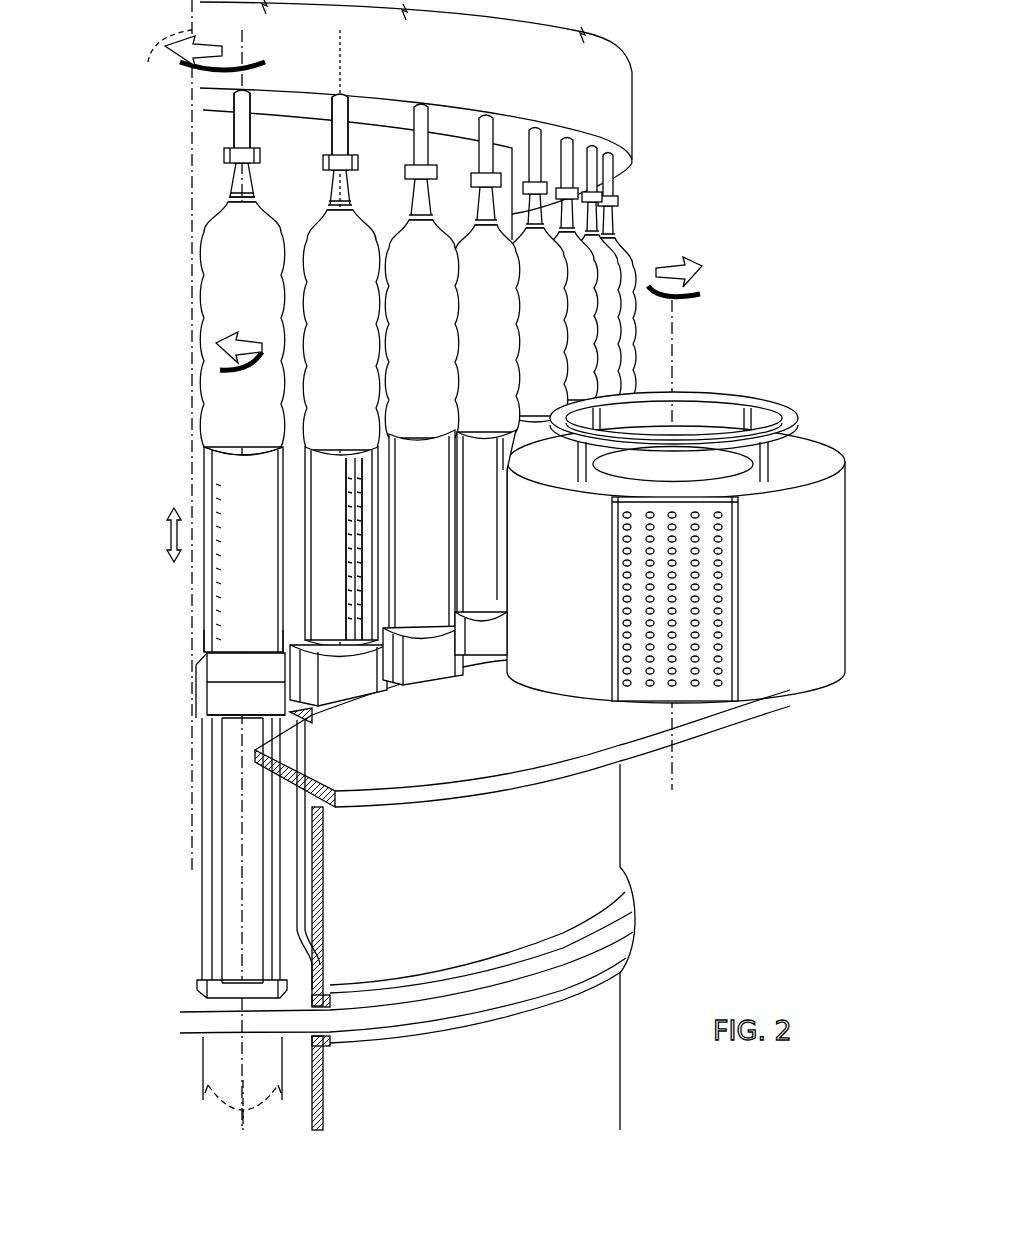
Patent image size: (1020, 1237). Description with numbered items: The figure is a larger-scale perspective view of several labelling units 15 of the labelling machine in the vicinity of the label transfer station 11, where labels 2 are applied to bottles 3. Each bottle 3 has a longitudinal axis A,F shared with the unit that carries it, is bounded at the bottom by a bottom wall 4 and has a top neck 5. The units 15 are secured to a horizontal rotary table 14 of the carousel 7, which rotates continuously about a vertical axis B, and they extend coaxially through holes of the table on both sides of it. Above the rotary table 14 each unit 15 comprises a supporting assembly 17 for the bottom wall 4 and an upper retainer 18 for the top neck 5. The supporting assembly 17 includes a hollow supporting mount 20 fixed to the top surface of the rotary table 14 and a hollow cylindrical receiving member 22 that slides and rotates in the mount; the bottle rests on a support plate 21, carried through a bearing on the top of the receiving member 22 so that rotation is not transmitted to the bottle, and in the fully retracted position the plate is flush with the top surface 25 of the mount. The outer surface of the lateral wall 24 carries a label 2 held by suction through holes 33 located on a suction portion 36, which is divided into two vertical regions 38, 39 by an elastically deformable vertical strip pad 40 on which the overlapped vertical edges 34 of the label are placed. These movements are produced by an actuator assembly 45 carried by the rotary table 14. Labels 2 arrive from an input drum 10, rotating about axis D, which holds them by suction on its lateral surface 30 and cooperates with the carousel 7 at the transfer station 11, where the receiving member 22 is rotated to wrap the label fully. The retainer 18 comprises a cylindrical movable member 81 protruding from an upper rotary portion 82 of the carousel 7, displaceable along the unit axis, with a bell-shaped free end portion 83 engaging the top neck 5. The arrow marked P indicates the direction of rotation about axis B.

The label 2 is at (686, 702).
The bottle 3 is at (225, 276).
The bottom wall 4 is at (235, 444).
The top neck 5 is at (232, 194).
The carousel 7 is at (598, 90).
The input drum 10 is at (778, 652).
The second transfer station 11 is at (494, 560).
The rotary table 14 is at (295, 1000).
The unit 15 is at (362, 684).
The supporting assembly 17 is at (214, 750).
The upper retainer 18 is at (252, 128).
The hollow supporting mount 20 is at (221, 887).
The support plate 21 is at (226, 458).
The hollow cylindrical receiving member 22 is at (233, 628).
The lateral wall 24 is at (232, 652).
The top surface 25 is at (206, 706).
The lateral surface 30 is at (812, 536).
The through holes 33 is at (216, 556).
The vertical edges 34 is at (612, 602).
The suction portion 36 is at (343, 437).
The vertical region 38 is at (334, 470).
The vertical region 39 is at (368, 470).
The vertical strip pad 40 is at (337, 655).
The actuator assembly 45 is at (228, 1082).
The cylindrical movable member 81 is at (232, 120).
The upper rotary portion 82 is at (626, 125).
The bell-shaped free end portion 83 is at (254, 192).
The vertical axis B is at (200, 50).
The axis P is at (192, 74).
The longitudinal axis D is at (676, 768).
The longitudinal axis and unit axis A,F is at (282, 1110).